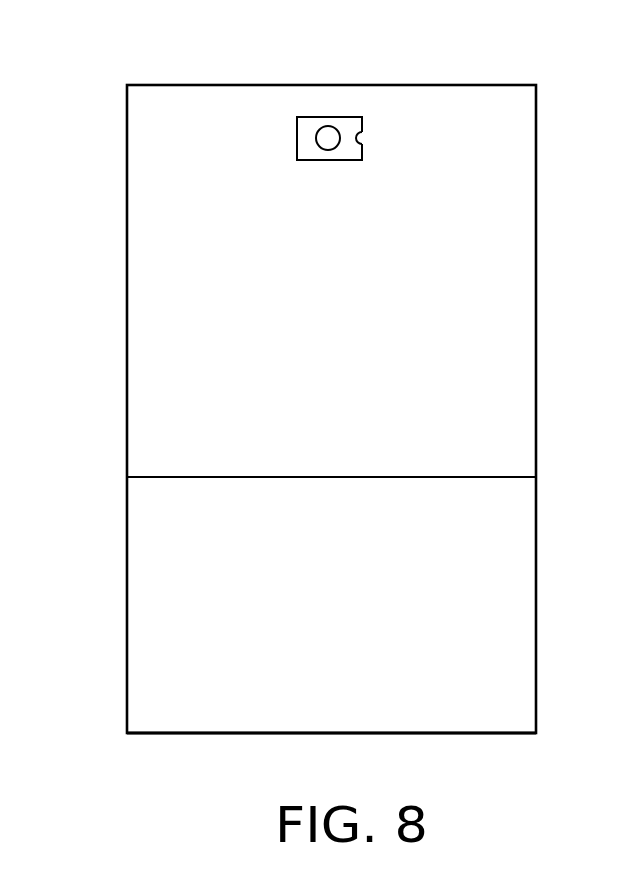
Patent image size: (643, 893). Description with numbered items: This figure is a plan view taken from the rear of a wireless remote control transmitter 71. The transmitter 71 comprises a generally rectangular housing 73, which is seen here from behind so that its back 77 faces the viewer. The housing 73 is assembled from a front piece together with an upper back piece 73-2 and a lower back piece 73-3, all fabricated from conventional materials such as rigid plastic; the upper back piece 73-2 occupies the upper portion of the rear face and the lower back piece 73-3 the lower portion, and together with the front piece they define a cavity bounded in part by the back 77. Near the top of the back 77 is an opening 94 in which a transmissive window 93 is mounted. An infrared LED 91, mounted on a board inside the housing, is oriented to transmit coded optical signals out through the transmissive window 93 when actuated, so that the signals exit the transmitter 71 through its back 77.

The wireless remote control transmitter 71 is at (247, 735).
The housing 73 is at (122, 370).
The upper back piece 73-2 is at (498, 345).
The lower back piece 73-3 is at (498, 600).
The back 77 is at (163, 422).
The infrared LED 91 is at (327, 138).
The transmissive window 93 is at (343, 122).
The opening 94 is at (360, 125).